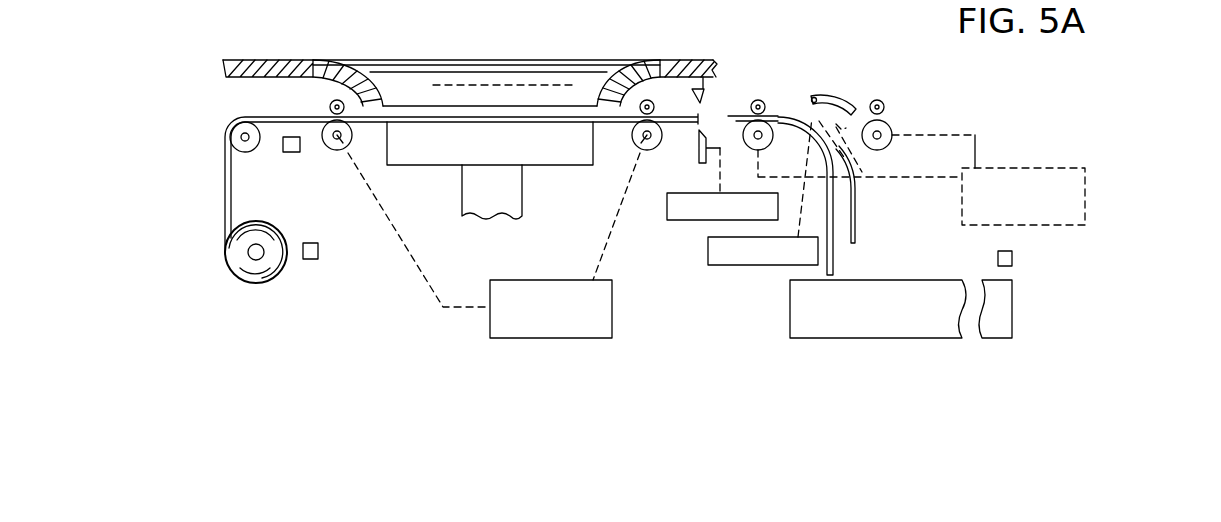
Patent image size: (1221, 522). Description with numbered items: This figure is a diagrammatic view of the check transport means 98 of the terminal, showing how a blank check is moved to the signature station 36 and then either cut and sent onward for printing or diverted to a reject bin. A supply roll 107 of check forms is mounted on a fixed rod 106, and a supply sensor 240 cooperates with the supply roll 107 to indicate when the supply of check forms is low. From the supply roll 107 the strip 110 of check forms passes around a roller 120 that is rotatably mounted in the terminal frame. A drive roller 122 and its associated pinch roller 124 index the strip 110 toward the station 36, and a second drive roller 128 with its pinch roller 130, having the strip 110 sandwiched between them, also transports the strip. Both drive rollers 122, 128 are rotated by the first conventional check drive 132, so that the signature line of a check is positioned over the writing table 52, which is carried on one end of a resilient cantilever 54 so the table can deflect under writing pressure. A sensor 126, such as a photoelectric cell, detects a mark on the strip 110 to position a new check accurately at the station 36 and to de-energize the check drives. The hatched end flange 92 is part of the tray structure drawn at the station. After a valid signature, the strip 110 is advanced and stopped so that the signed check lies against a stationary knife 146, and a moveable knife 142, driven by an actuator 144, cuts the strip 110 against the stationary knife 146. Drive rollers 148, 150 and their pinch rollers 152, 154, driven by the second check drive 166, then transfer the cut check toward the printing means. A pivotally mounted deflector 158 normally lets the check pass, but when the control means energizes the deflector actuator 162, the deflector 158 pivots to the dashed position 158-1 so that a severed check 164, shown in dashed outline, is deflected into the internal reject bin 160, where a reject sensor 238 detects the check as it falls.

The station 36 is at (470, 57).
The tray end flange 92 is at (252, 48).
The stationary knife 146 is at (685, 61).
The pinch roller 124 is at (303, 70).
The pinch roller 130 is at (615, 67).
The strip of check forms 110 is at (405, 183).
The roller 120 is at (216, 126).
The drive roller 122 is at (387, 213).
The second drive roller 128 is at (612, 200).
The sensor 126 is at (274, 162).
The supply sensor 240 is at (344, 263).
The supply roll 107 is at (235, 272).
The fixed rod 106 is at (211, 264).
The check transport means 98 is at (318, 314).
The writing table 52 is at (490, 159).
The cantilever 54 is at (487, 214).
The moveable knife 142 is at (684, 161).
The actuator 144 is at (671, 212).
The check drive #1 132 is at (512, 320).
The drive roller 148 is at (845, 116).
The pinch roller 152 is at (788, 86).
The drive roller 150 is at (918, 145).
The pinch roller 154 is at (914, 96).
The deflector 158 is at (852, 81).
The deflector dashed-outline position 158-1 is at (875, 168).
The severed check 164 is at (876, 201).
The deflector actuator 162 is at (753, 211).
The reject bin 160 is at (862, 317).
The check drive #2 166 is at (1066, 196).
The reject sensor 238 is at (1035, 254).